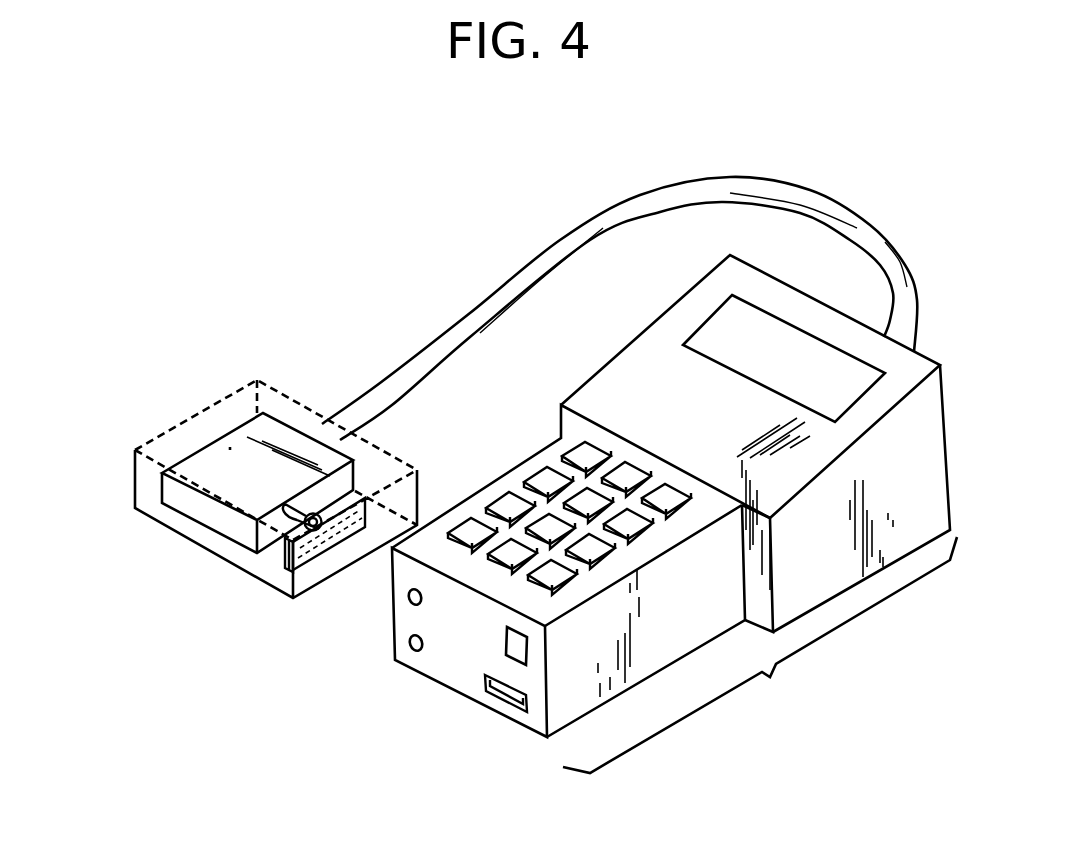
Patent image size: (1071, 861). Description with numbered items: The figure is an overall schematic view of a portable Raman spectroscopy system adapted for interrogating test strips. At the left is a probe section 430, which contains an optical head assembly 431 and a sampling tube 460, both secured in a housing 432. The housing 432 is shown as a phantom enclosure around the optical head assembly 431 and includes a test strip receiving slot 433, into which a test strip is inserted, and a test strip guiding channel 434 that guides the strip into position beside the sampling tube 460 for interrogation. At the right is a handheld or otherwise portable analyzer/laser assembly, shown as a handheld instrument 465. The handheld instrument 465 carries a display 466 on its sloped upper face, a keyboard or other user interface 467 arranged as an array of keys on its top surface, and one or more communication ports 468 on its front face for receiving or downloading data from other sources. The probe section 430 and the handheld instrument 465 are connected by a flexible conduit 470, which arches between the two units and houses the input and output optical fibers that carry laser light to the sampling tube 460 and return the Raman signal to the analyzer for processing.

The probe section 430 is at (231, 458).
The optical head assembly 431 is at (203, 517).
The housing 432 is at (133, 487).
The test strip receiving slot 433 is at (280, 558).
The test strip guiding channel 434 is at (333, 557).
The sampling tube 460 is at (318, 500).
The handheld instrument 465 is at (674, 514).
The display 466 is at (778, 336).
The keyboard 467 is at (627, 553).
The communication port 468 is at (505, 691).
The flexible conduit 470 is at (550, 247).